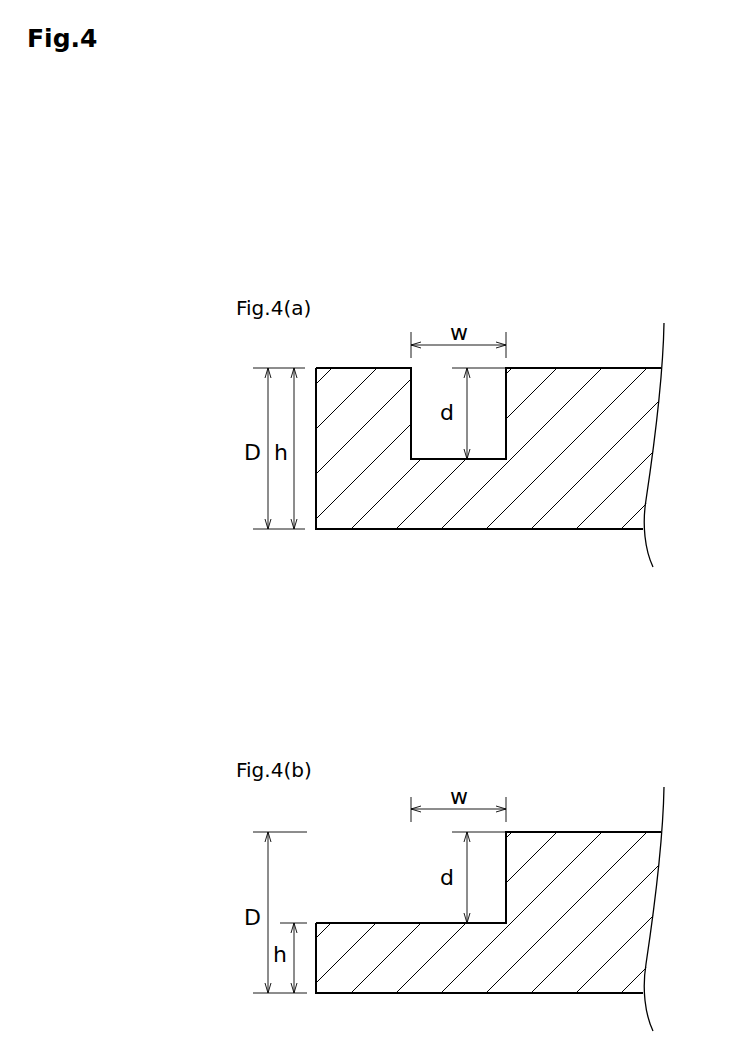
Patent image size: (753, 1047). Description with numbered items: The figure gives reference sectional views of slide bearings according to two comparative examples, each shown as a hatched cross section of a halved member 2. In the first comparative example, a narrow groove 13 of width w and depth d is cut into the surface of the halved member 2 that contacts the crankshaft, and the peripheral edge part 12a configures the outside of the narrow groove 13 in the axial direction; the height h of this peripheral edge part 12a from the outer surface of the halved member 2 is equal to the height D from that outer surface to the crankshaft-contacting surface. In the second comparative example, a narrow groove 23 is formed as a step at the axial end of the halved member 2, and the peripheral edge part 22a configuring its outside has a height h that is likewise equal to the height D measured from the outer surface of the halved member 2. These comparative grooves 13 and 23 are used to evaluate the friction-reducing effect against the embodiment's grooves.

In FIG. 4A, the halved member 2 is at (587, 377).
In FIG. 4B, the halved member 2 is at (570, 840).
In FIG. 4A, the peripheral edge part 12a is at (385, 366).
In FIG. 4A, the narrow groove 13 is at (506, 438).
In FIG. 4B, the peripheral edge part 22a is at (386, 921).
In FIG. 4B, the narrow groove 23 is at (506, 898).